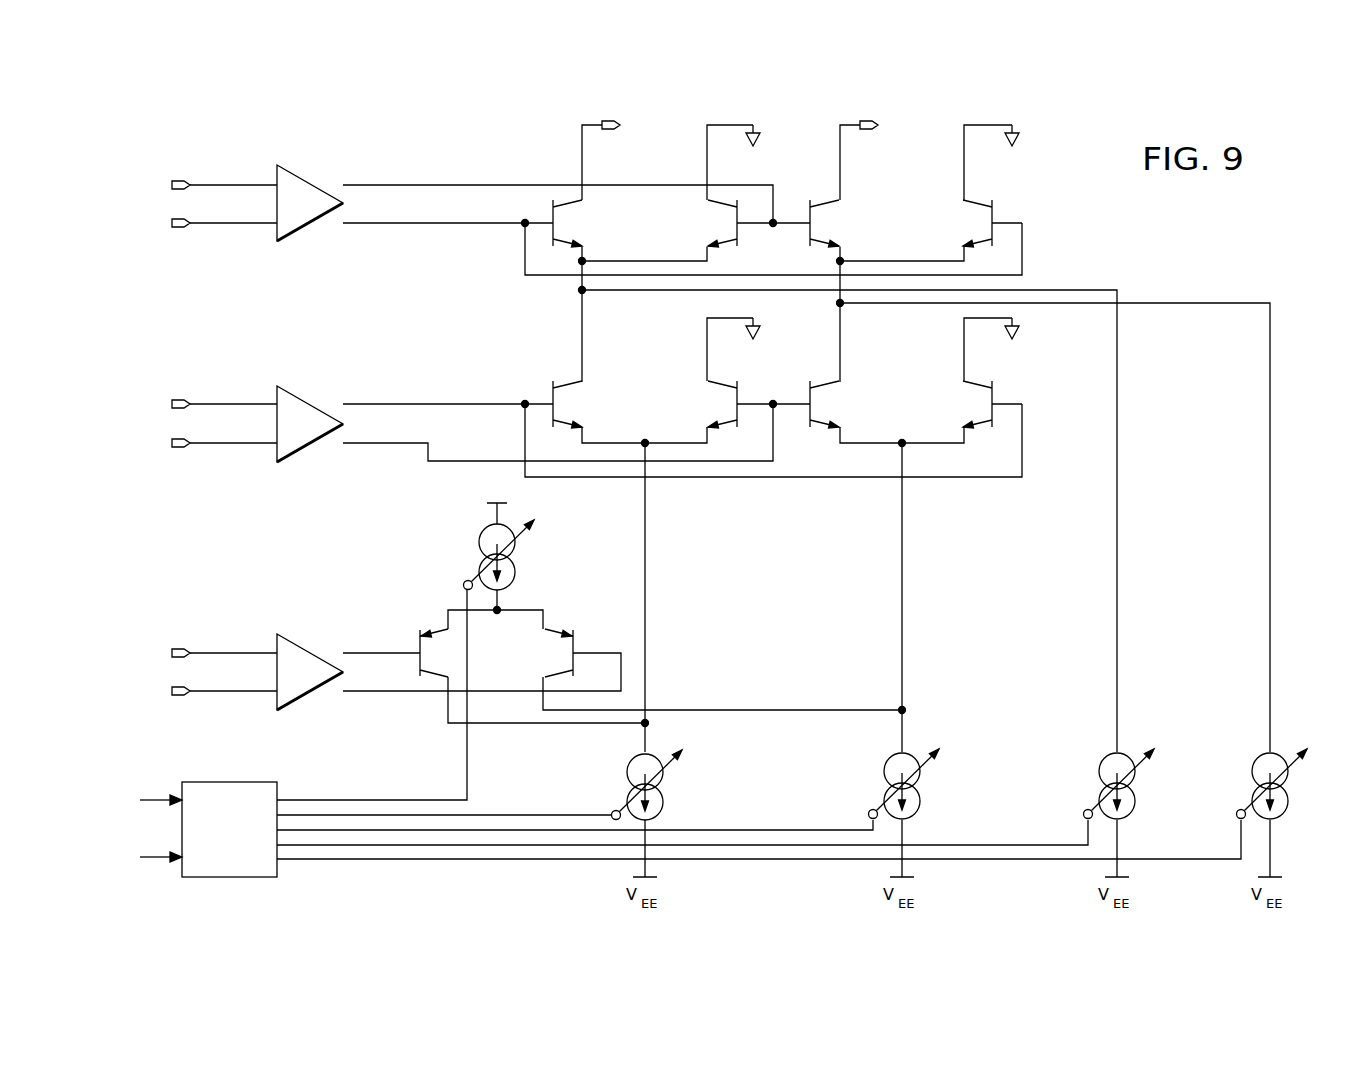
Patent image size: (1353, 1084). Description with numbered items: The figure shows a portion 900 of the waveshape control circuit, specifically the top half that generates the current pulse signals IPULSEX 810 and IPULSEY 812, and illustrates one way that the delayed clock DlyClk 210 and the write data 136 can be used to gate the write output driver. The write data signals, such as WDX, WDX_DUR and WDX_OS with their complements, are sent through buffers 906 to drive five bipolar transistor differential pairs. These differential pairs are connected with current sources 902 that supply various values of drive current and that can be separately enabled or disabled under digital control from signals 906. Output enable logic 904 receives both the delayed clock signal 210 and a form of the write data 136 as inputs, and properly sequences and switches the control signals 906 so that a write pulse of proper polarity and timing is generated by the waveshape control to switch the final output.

The portion of waveshape control circuit 900 is at (1154, 246).
The IPULSEX current pulse signal 810 is at (582, 160).
The IPULSEY current pulse signal 812 is at (842, 170).
The current source 902 is at (478, 548).
The output enable logic 904 is at (281, 870).
The buffer 906 is at (292, 236).
The write data 136 is at (162, 797).
The DlyClk signal 210 is at (162, 862).